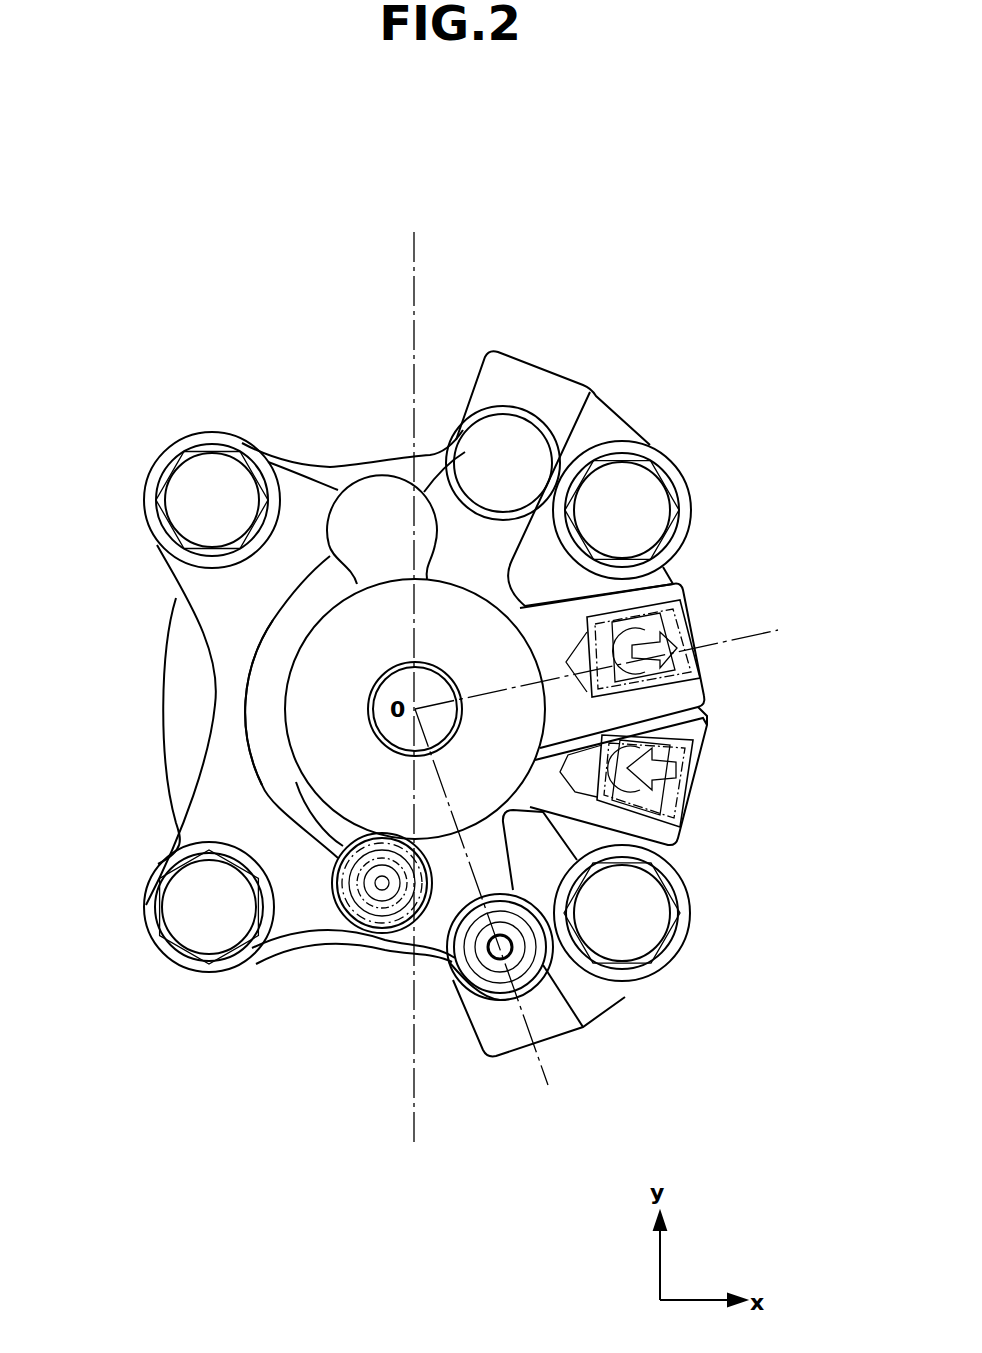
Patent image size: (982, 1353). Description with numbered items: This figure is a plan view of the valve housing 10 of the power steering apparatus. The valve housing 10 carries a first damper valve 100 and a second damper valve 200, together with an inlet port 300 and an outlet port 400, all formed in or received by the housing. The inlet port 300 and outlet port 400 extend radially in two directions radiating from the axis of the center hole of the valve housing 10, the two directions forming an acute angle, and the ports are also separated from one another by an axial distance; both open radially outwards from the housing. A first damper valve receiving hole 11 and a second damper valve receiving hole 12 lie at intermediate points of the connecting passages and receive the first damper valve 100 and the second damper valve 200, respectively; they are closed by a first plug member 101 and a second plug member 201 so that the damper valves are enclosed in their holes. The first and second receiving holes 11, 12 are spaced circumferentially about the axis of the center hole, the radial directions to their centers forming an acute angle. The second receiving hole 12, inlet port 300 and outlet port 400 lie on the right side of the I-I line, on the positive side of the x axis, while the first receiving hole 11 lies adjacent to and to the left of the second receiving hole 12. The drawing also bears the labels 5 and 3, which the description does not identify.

The valve housing 10 is at (172, 392).
The first damper valve receiving hole 11 is at (332, 868).
The second damper valve receiving hole 12 is at (462, 954).
The rotation shaft 5 is at (385, 890).
The first damper valve 100 is at (364, 884).
The first plug member 101 is at (356, 907).
The second damper valve 200 is at (505, 953).
The second plug member 201 is at (460, 995).
The inlet port 300 is at (705, 790).
The outlet port 400 is at (692, 614).
The section line III-III 3 is at (604, 691).